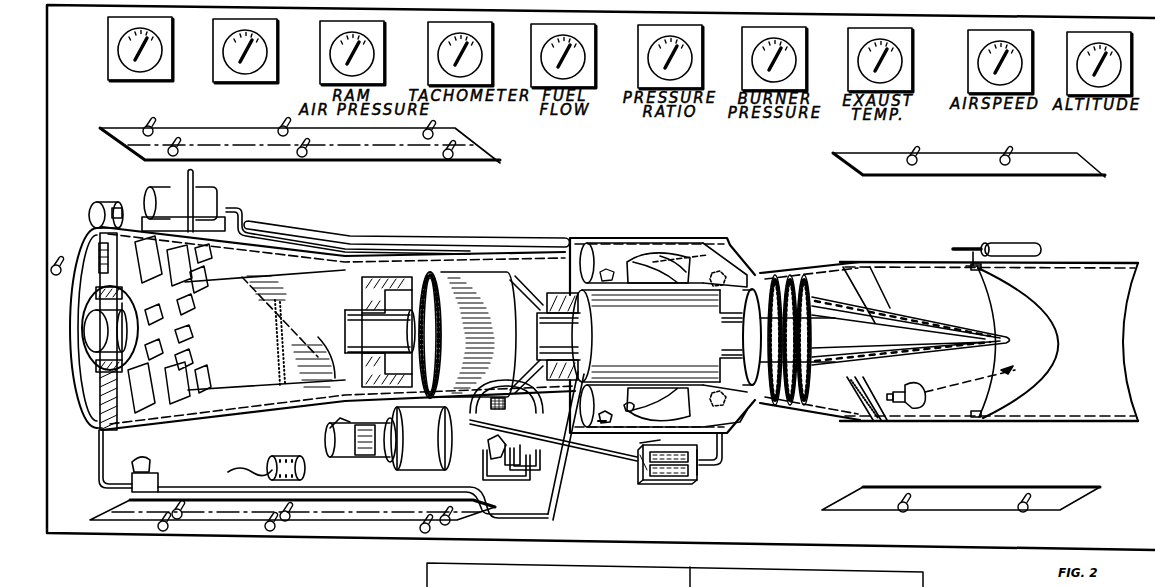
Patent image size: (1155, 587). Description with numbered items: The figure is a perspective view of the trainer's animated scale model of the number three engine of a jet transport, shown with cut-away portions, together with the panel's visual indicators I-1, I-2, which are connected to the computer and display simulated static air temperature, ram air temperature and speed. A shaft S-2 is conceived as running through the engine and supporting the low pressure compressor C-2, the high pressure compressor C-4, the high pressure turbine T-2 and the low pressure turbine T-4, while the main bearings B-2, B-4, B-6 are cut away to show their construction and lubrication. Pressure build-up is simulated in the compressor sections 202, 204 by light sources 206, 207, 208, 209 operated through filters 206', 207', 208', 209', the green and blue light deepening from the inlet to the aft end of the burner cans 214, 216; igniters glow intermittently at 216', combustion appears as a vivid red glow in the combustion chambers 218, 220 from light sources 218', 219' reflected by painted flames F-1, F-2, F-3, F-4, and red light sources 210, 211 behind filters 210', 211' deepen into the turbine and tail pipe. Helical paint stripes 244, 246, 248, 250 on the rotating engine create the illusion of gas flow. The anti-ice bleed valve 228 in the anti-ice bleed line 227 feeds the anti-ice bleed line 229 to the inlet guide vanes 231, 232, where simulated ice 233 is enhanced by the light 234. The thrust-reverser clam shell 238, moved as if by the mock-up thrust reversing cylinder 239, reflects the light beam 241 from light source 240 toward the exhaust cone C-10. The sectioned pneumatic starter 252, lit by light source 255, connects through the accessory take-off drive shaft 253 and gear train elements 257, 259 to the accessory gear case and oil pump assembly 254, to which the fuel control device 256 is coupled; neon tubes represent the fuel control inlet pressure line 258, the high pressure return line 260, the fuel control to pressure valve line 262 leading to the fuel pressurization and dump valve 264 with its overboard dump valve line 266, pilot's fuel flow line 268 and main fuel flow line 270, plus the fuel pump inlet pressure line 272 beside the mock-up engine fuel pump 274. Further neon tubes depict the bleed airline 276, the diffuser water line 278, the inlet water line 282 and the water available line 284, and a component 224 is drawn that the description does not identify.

The visual indicator I-1 is at (118, 40).
The visual indicator I-2 is at (223, 41).
The compressor section 202 is at (258, 269).
The compressor section 204 is at (468, 270).
The light source 206 is at (289, 128).
The filter 206' is at (276, 145).
The light source 207 is at (312, 157).
The filter 207' is at (116, 156).
The light source 208 is at (312, 520).
The filter 208' is at (288, 504).
The light source 209 is at (295, 533).
The filter 209' is at (79, 515).
The light source 210 is at (982, 152).
The filter 210' is at (980, 163).
The light source 211 is at (984, 514).
The filter 211' is at (975, 502).
The burner can 214 is at (608, 270).
The burner can 216 is at (616, 451).
The igniter 216' is at (603, 447).
The combustion chamber 218 is at (665, 317).
The light source 218' is at (744, 261).
The light source 219' is at (745, 411).
The combustion chamber 220 is at (661, 481).
The pressure sensor 224 is at (503, 410).
The anti-ice bleed line 227 is at (176, 488).
The anti-ice bleed valve 228 is at (151, 472).
The anti-ice bleed line 229 is at (101, 458).
The inlet guide vane 231 is at (94, 421).
The inlet guide vane 232 is at (100, 288).
The ice 233 is at (98, 250).
The light 234 is at (98, 253).
The thrust-reverser clam shell 238 is at (990, 404).
The thrust reversing cylinder 239 is at (1048, 229).
The light source 240 is at (917, 410).
The light beam 241 is at (950, 392).
The helical paint stripe 244 is at (252, 385).
The helical paint stripe 246 is at (283, 389).
The helical paint stripe 248 is at (320, 393).
The helical paint stripe 250 is at (453, 273).
The pneumatic starter 252 is at (386, 444).
The accessory take-off drive shaft 253 is at (331, 441).
The accessory gear case and oil pump assembly 254 is at (396, 471).
The light source 255 is at (276, 463).
The fuel control device 256 is at (484, 479).
The gear train element 257 is at (332, 428).
The fuel control inlet pressure line 258 is at (521, 487).
The gear train element 259 is at (431, 270).
The high pressure return line 260 is at (488, 466).
The fuel control to pressure valve line 262 is at (647, 424).
The fuel pressurization and dump valve 264 is at (690, 472).
The overboard dump valve line 266 is at (665, 477).
The pilot's fuel flow from dump valve line 268 is at (675, 476).
The main fuel flow from dump valve line 270 is at (698, 461).
The fuel pump inlet pressure line 272 is at (723, 448).
The engine fuel pump 274 is at (567, 480).
The bleed airline 276 is at (240, 226).
The diffuser water line 278 is at (320, 231).
The inlet water line 282 is at (145, 204).
The water available line 284 is at (187, 181).
The main bearing B-2 is at (97, 372).
The main bearing B-4 is at (364, 278).
The main bearing B-6 is at (550, 293).
The low pressure compressor C-2 is at (232, 324).
The high pressure compressor C-4 is at (471, 335).
The exhaust cone C-10 is at (876, 323).
The painted flame F-1 is at (643, 250).
The painted flame F-2 is at (660, 257).
The painted flame F-3 is at (604, 428).
The painted flame F-4 is at (641, 428).
The shaft S-2 is at (88, 338).
The high pressure turbine T-2 is at (242, 212).
The low pressure turbine T-4 is at (778, 268).